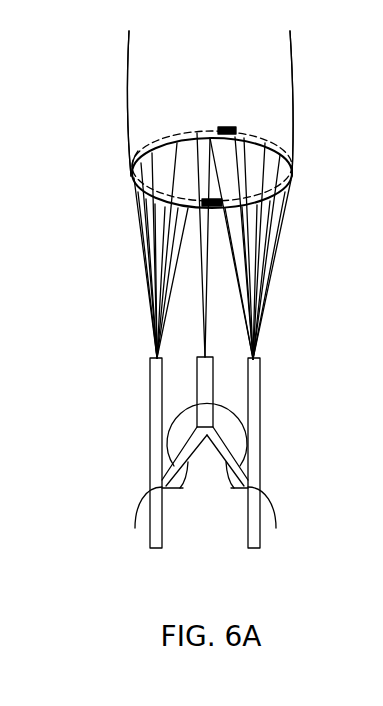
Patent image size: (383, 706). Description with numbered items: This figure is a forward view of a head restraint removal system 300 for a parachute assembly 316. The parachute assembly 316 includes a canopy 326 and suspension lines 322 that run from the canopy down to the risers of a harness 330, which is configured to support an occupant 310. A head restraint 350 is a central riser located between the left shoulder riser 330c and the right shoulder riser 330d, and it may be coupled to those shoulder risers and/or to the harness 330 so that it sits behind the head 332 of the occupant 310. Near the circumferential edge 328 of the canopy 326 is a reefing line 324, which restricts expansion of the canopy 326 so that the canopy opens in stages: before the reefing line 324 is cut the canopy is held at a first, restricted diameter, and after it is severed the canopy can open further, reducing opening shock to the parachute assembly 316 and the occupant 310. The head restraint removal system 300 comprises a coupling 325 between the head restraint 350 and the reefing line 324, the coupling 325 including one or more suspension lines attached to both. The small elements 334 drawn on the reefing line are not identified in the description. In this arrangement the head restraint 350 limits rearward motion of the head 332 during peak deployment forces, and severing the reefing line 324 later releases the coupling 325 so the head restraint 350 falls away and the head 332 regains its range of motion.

The head restraint removal system 300 is at (258, 132).
The occupant 310 is at (123, 498).
The parachute assembly 316 is at (97, 41).
The suspension lines 322 is at (140, 262).
The reefing line 324 is at (282, 149).
The coupling 325 is at (209, 336).
The canopy 326 is at (209, 67).
The circumferential edge 328 is at (129, 180).
The harness 330 is at (198, 462).
The left shoulder riser 330c is at (158, 404).
The right shoulder riser 330d is at (255, 373).
The head 332 is at (222, 415).
The sensor module 334 is at (228, 128).
The head restraint 350 is at (213, 427).